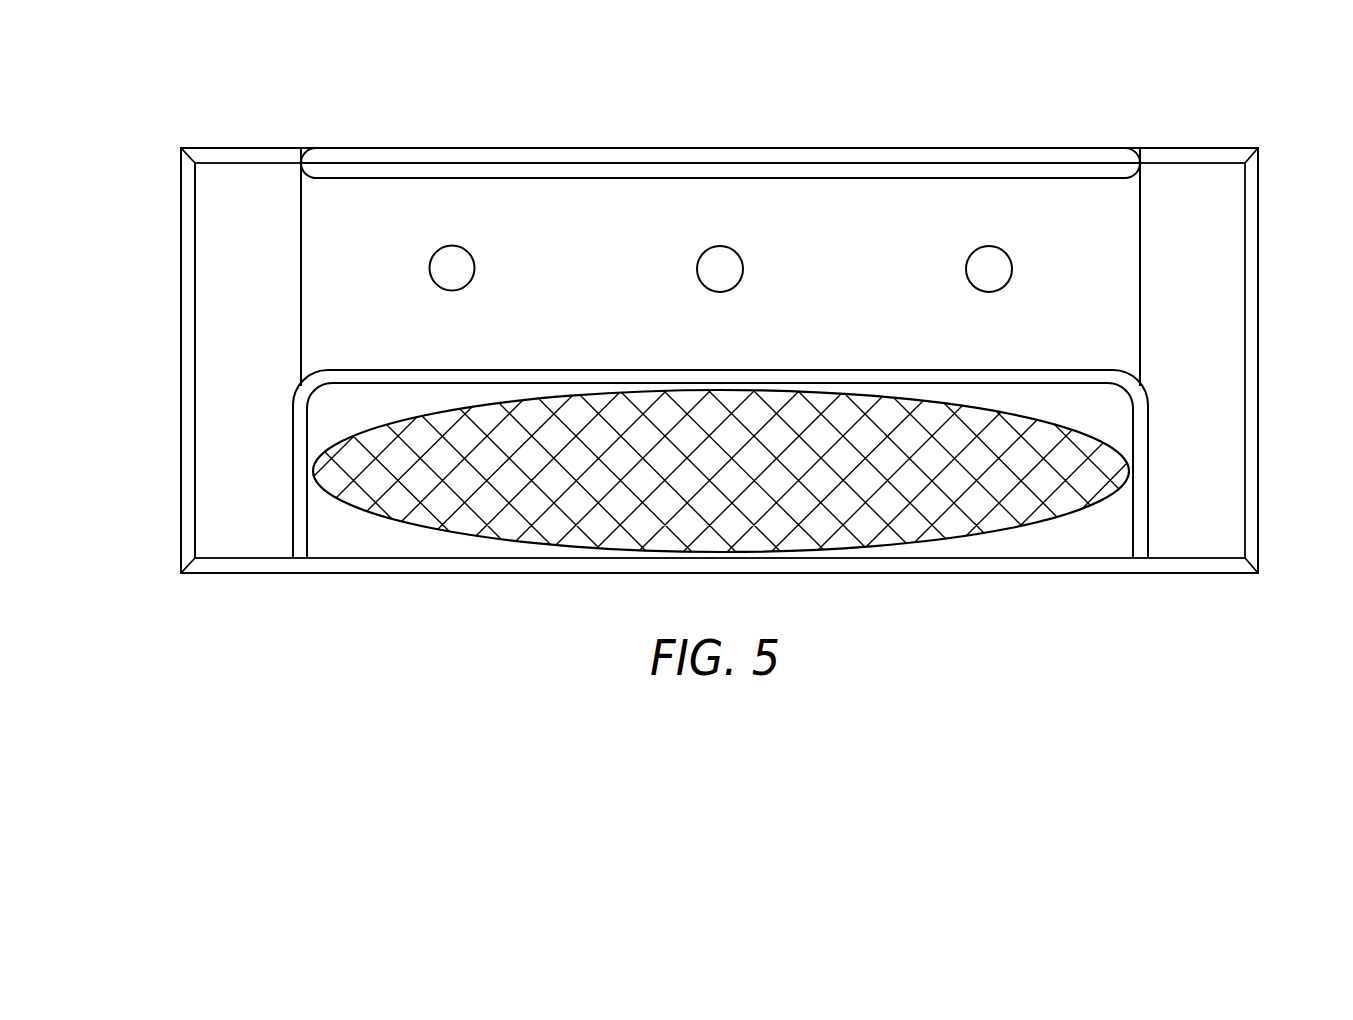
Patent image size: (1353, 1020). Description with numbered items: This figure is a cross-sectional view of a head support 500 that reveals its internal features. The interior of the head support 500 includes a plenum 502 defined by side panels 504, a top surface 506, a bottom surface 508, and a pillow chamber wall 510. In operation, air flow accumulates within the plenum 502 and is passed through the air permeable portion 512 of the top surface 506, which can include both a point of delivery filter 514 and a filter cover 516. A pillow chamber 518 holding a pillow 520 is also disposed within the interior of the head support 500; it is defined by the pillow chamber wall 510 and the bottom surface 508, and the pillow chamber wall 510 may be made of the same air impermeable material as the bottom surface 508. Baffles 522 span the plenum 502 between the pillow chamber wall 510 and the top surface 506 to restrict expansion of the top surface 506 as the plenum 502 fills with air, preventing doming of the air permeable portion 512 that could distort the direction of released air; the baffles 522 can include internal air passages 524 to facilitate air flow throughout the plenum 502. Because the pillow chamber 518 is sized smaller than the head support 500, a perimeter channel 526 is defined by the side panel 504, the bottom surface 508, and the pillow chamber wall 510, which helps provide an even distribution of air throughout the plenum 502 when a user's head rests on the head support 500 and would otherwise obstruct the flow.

The head support 500 is at (153, 158).
The plenum 502 is at (1197, 330).
The side panels 504 is at (180, 442).
The top surface 506 is at (1192, 157).
The bottom surface 508 is at (250, 573).
The pillow chamber wall 510 is at (1138, 513).
The air permeable portion 512 is at (345, 148).
The point of delivery filter 514 is at (477, 170).
The filter cover 516 is at (573, 155).
The pillow chamber 518 is at (363, 528).
The pillow 520 is at (912, 523).
The baffles 522 is at (1050, 217).
The internal air passages 524 is at (465, 266).
The perimeter channel 526 is at (220, 535).